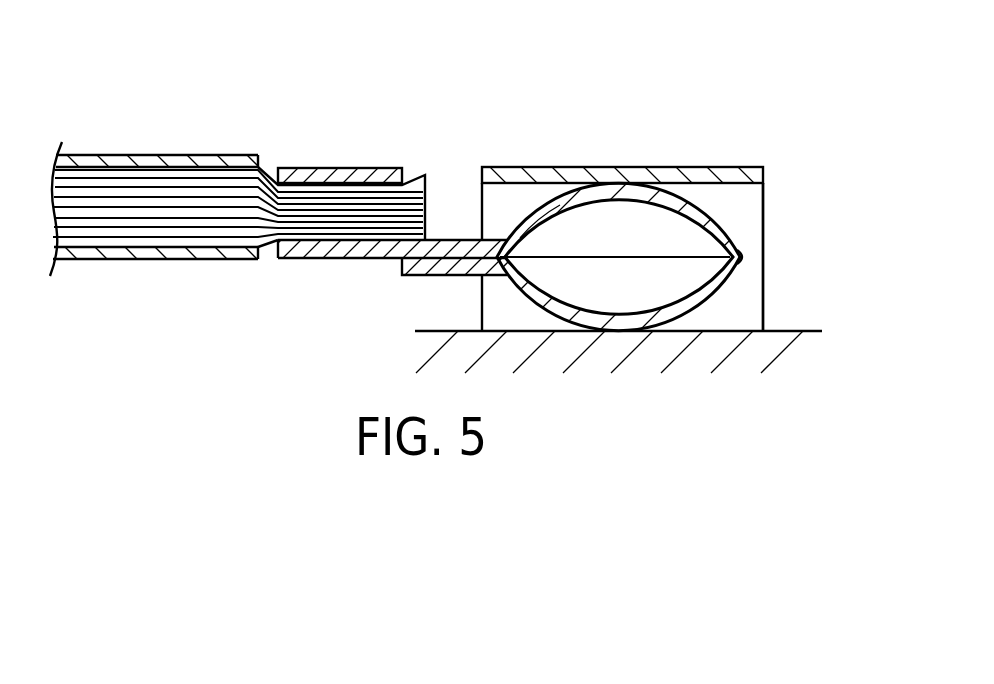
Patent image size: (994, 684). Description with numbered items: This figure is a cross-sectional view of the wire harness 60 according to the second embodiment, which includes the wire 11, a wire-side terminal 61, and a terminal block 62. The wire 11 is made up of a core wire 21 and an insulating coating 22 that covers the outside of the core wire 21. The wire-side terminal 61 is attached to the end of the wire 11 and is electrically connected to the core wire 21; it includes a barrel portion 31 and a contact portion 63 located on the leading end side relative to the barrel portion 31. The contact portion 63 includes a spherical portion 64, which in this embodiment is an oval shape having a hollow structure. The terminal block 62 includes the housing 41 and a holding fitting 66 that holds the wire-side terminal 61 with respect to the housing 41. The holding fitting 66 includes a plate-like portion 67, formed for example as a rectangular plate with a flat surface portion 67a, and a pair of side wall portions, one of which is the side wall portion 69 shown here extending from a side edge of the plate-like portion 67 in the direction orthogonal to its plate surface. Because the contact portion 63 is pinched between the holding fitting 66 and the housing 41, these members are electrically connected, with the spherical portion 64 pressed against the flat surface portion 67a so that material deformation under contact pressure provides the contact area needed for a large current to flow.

The wire 11 is at (90, 153).
The insulating coating 22 is at (140, 153).
The core wire 21 is at (92, 235).
The barrel portion 31 is at (338, 176).
The wire-side terminal 61 is at (298, 166).
The wire harness 60 is at (635, 170).
The plate-like portion 67 is at (697, 166).
The flat surface portion 67a is at (549, 189).
The holding fitting 66 is at (743, 166).
The side wall portion 69 is at (757, 212).
The contact portion 63 is at (518, 216).
The spherical portion 64 is at (667, 191).
The terminal block 62 is at (792, 330).
The housing 41 is at (770, 352).